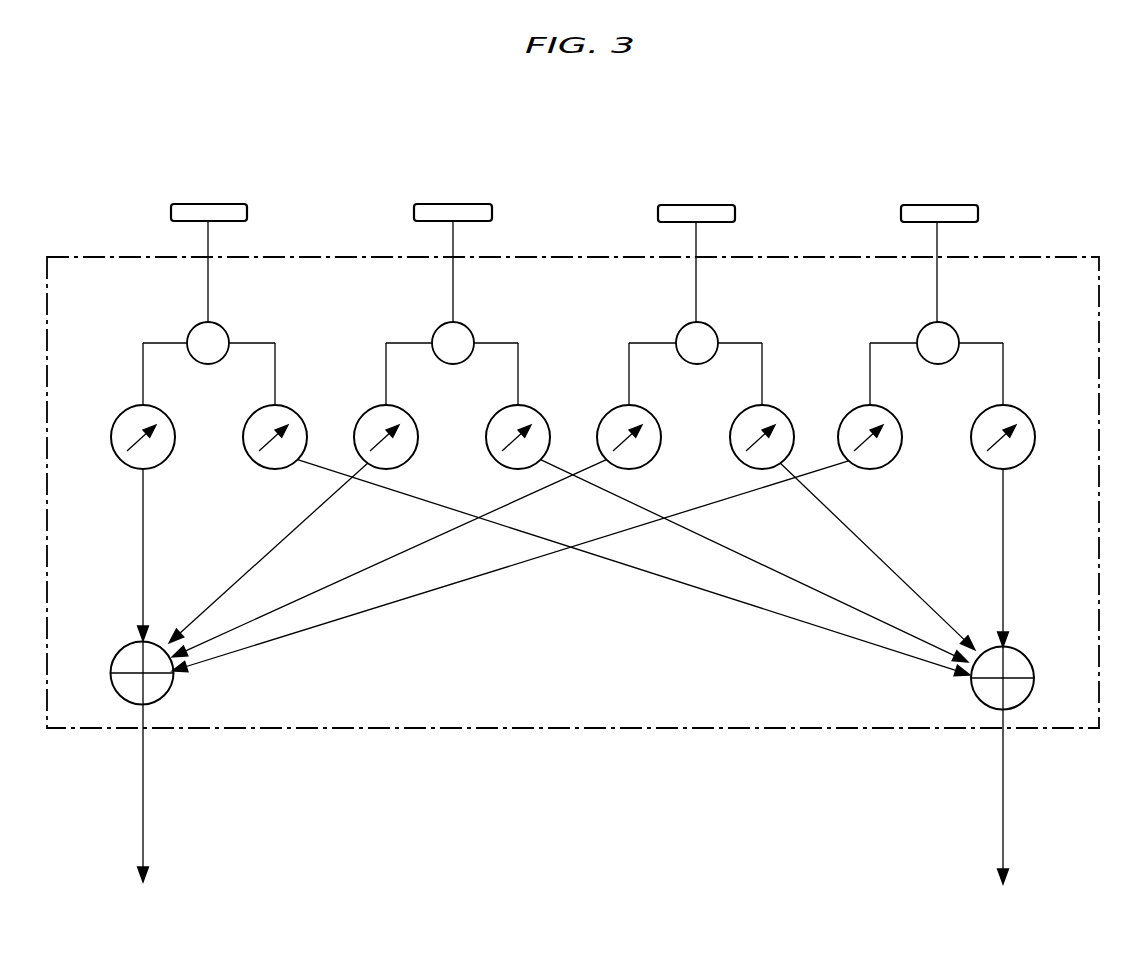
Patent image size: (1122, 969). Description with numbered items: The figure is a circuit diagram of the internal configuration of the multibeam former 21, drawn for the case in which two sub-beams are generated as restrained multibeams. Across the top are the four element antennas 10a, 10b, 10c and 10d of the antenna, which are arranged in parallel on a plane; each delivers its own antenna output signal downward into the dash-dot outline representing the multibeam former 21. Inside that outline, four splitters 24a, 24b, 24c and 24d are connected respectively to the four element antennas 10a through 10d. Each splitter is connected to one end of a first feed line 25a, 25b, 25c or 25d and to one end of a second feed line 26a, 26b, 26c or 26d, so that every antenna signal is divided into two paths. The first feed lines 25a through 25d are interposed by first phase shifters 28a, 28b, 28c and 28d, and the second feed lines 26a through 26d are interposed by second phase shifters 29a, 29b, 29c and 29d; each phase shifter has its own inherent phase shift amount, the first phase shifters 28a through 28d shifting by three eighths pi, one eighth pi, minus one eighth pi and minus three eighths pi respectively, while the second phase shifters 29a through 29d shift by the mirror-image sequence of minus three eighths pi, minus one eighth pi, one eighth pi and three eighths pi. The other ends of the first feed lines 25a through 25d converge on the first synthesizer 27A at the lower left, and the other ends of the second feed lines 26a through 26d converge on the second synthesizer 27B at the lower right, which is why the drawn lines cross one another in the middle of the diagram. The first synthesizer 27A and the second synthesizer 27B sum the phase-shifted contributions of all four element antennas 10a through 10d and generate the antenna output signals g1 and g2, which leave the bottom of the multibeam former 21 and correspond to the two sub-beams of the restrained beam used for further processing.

The element antenna 10a is at (232, 190).
The element antenna 10b is at (476, 190).
The element antenna 10c is at (699, 205).
The element antenna 10d is at (960, 190).
The multibeam former 21 is at (1033, 258).
The splitter 24a is at (224, 330).
The splitter 24b is at (468, 330).
The splitter 24c is at (712, 330).
The splitter 24d is at (953, 330).
The first feed line 25a is at (143, 385).
The first feed line 25b is at (386, 385).
The first feed line 25c is at (630, 385).
The first feed line 25d is at (871, 385).
The second feed line 26a is at (275, 385).
The second feed line 26b is at (518, 385).
The second feed line 26c is at (763, 385).
The second feed line 26d is at (1004, 385).
The first synthesizer 27A is at (126, 651).
The second synthesizer 27B is at (1020, 655).
The first phase shifter 28a is at (166, 461).
The first phase shifter 28b is at (408, 461).
The first phase shifter 28c is at (652, 461).
The first phase shifter 28d is at (893, 461).
The second phase shifter 29a is at (252, 461).
The second phase shifter 29b is at (495, 414).
The second phase shifter 29c is at (739, 461).
The second phase shifter 29d is at (980, 461).
The antenna output signal g1 is at (156, 793).
The antenna output signal g2 is at (1016, 796).